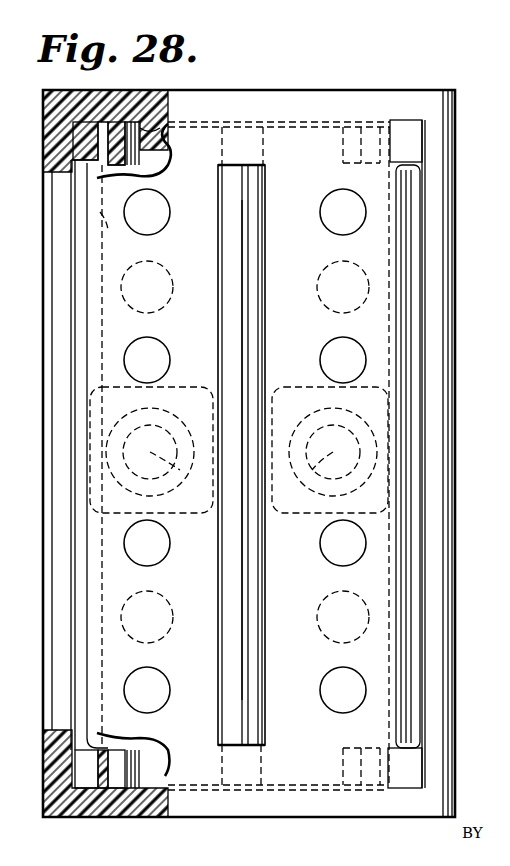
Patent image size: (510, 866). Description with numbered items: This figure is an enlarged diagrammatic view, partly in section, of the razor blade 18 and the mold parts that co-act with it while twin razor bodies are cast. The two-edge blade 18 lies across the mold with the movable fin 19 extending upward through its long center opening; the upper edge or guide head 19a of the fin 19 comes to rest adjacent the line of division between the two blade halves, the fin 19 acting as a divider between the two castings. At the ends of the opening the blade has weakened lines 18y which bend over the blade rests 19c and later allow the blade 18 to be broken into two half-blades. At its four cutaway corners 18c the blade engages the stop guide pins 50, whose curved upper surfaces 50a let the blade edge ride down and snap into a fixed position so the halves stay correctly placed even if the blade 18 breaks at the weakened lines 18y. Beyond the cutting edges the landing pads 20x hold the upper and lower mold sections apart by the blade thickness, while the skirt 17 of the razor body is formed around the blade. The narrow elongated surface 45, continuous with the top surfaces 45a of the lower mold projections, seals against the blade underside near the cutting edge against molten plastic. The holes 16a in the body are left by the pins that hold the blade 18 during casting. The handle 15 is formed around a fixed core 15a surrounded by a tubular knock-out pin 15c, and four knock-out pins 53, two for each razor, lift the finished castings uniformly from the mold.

The skirt 17 is at (44, 100).
The landing pad 20x is at (85, 135).
The stop guide pin 50 is at (118, 140).
The curved upper surface of stop guide pin 50a is at (133, 170).
The razor blade 18 is at (155, 165).
The cutaway corner 18c is at (158, 138).
The weakened line 18y is at (266, 150).
The blade rest 19c is at (240, 140).
The fin 19 is at (252, 362).
The guide head 19a is at (250, 264).
The elongated surface 45 is at (80, 328).
The top surface of projecting portion 45a is at (117, 233).
The hole 16a is at (155, 218).
The knock-out pin 53 is at (165, 280).
The core 15a is at (152, 434).
The tubular knock-out pin 15c is at (170, 432).
The handle 15 is at (196, 488).